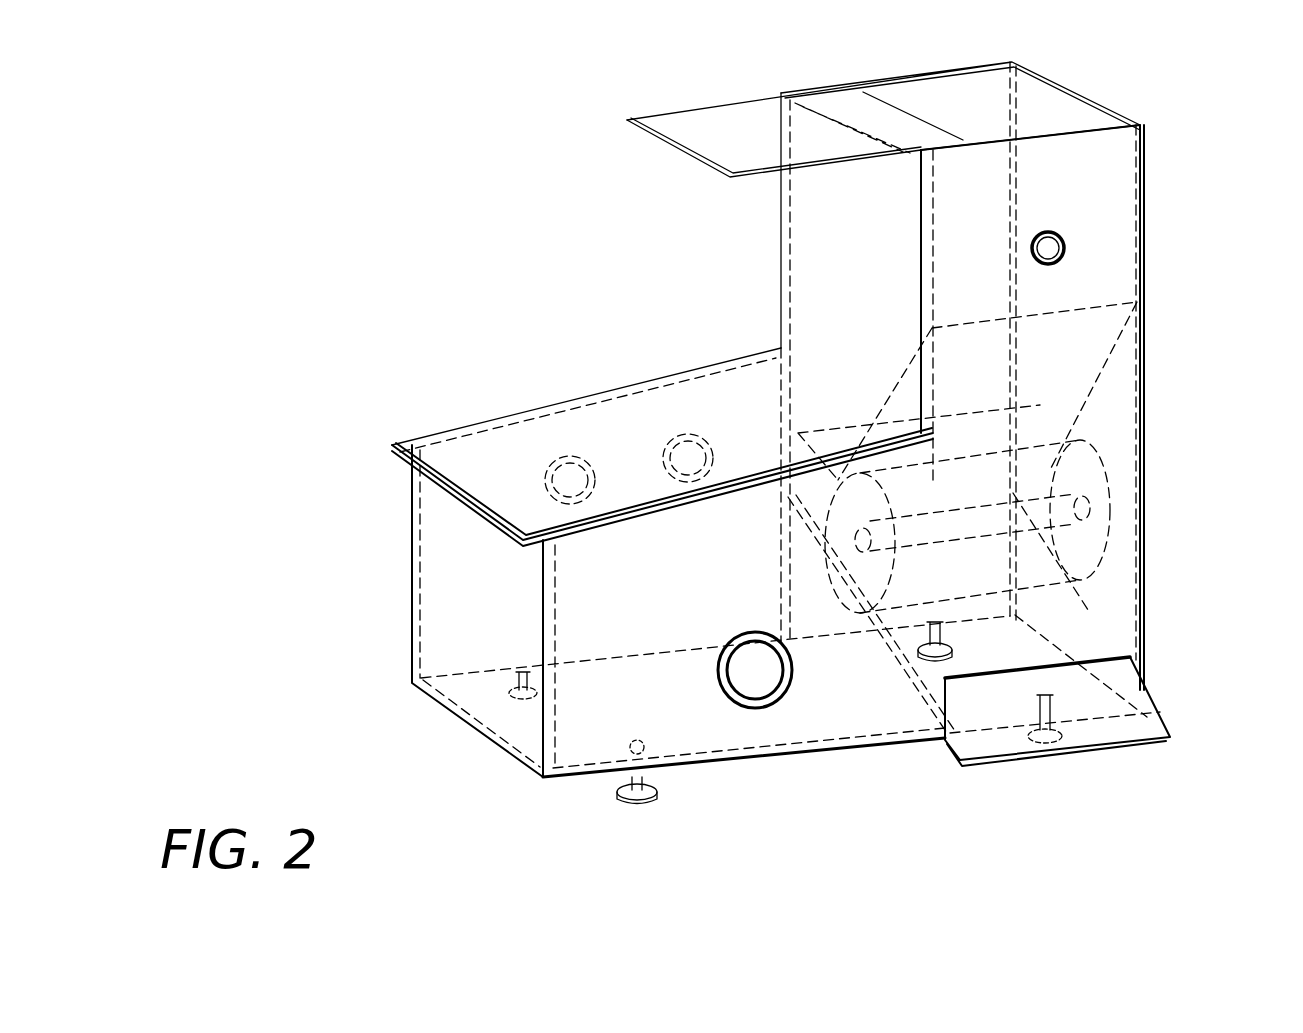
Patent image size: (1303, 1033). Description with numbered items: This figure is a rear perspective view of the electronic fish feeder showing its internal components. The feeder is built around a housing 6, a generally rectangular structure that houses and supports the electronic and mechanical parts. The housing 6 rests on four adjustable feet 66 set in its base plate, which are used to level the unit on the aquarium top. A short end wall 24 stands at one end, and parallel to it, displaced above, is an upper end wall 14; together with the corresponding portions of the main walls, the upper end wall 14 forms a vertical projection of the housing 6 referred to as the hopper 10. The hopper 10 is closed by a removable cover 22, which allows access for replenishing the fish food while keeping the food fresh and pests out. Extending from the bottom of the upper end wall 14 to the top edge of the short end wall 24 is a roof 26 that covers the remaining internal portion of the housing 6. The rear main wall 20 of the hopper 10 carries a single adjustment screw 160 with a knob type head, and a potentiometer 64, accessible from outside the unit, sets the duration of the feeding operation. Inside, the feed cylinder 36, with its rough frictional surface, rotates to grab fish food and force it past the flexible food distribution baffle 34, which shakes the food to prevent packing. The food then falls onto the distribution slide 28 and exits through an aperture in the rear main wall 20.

The housing 6 is at (1148, 620).
The hopper 10 is at (755, 231).
The upper end wall 14 is at (827, 270).
The rear main wall 20 is at (1100, 246).
The removable cover 22 is at (735, 128).
The short end wall 24 is at (478, 600).
The roof 26 is at (583, 427).
The distribution slide 28 is at (1157, 723).
The food distribution baffle 34 is at (1087, 470).
The feed cylinder 36 is at (1095, 540).
The potentiometer 64 is at (727, 697).
The adjustable feet 66 is at (640, 800).
The adjustment screw 160 is at (1055, 250).